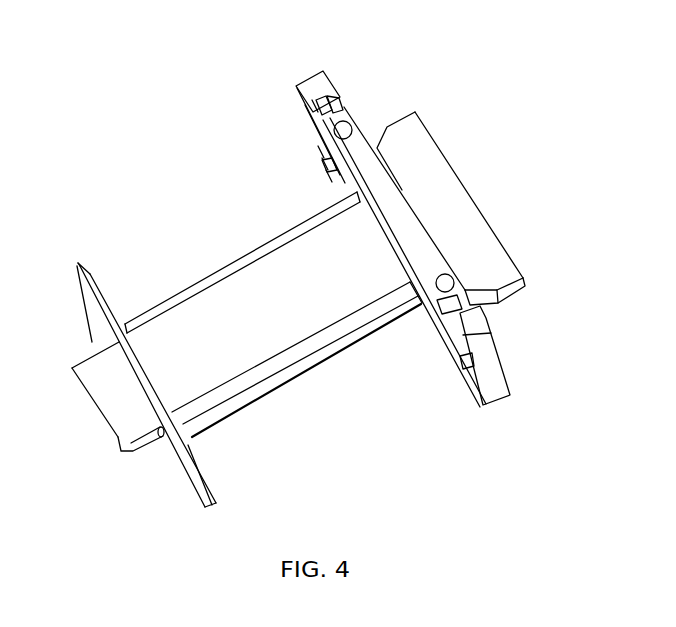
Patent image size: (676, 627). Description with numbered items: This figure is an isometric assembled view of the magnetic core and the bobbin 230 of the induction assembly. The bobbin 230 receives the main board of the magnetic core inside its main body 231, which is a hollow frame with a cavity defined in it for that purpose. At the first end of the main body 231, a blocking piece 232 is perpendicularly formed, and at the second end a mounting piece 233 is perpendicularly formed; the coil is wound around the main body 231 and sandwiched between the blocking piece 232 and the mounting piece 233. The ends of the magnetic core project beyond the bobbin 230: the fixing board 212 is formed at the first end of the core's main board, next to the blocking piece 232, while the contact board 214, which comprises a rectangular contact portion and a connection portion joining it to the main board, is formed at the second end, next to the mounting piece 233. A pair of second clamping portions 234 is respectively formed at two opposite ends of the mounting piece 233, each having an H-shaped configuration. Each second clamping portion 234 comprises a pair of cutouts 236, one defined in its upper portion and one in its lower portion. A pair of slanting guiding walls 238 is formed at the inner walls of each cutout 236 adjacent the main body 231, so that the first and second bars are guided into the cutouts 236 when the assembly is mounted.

The fixing board 212 is at (104, 396).
The contact board 214 is at (488, 236).
The bobbin 230 is at (185, 322).
The main body 231 is at (281, 338).
The blocking piece 232 is at (104, 296).
The mounting piece 233 is at (397, 206).
The second clamping portion 234 is at (307, 80).
The cutout 236 is at (332, 107).
The slanting guiding wall 238 is at (316, 112).